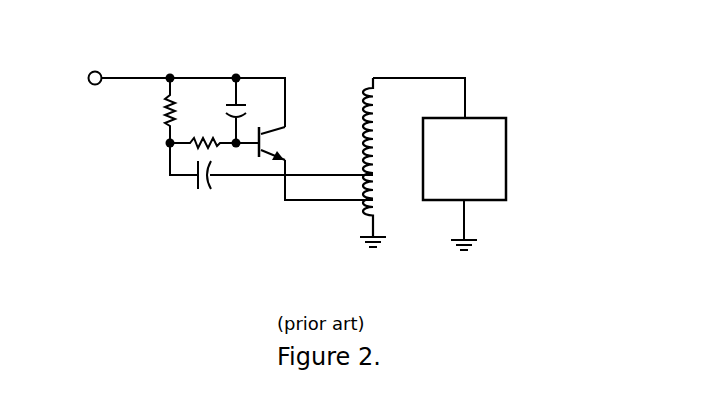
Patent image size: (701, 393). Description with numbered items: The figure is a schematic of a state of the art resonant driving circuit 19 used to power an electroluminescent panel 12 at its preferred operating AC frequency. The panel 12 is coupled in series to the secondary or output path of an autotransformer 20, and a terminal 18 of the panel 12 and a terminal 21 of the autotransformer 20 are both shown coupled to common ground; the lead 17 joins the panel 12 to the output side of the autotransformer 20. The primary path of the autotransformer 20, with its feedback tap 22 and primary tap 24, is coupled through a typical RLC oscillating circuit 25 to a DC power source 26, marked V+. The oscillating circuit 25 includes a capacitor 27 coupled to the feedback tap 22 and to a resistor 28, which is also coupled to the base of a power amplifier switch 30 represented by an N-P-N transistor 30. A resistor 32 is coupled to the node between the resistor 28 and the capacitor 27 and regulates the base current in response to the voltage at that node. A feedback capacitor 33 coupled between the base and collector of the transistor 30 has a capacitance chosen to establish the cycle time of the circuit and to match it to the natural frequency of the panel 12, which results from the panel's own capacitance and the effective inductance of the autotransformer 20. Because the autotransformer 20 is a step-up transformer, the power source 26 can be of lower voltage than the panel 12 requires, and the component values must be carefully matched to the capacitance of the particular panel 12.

The electroluminescent panel 12 is at (510, 152).
The panel lead 17 is at (468, 110).
The terminal 18 is at (472, 208).
The resonant driving circuit 19 is at (387, 130).
The autotransformer 20 is at (366, 100).
The terminal 21 is at (378, 235).
The feedback tap 22 is at (356, 172).
The primary tap 24 is at (358, 206).
The oscillating circuit 25 is at (182, 189).
The DC power source 26 is at (105, 71).
The capacitor 27 is at (213, 182).
The resistor 28 is at (194, 158).
The power amplifier switch 30 is at (290, 140).
The resistor 32 is at (162, 105).
The feedback capacitor 33 is at (240, 100).